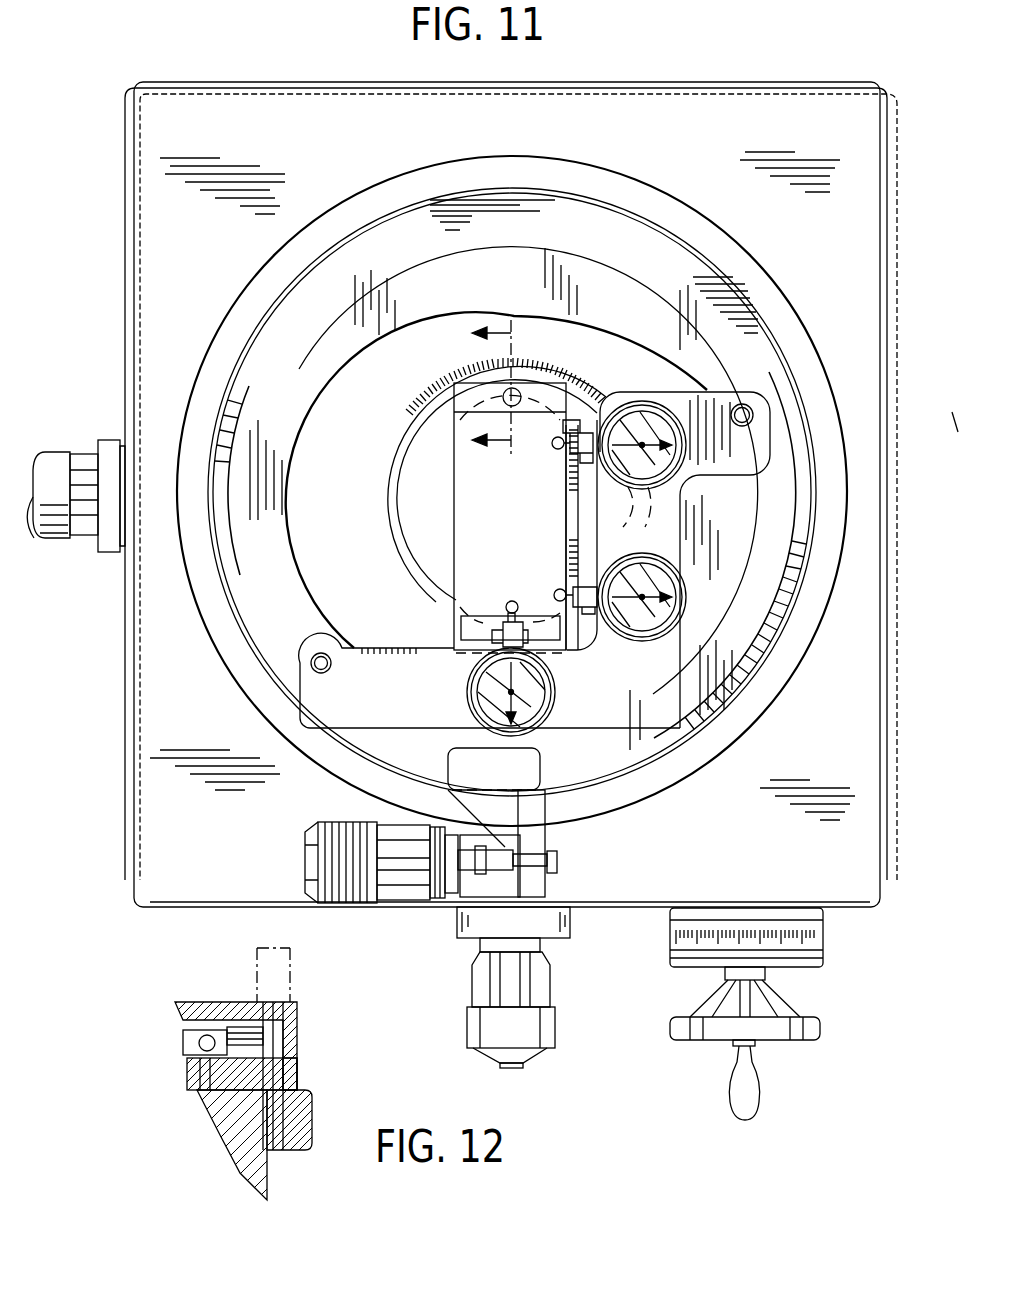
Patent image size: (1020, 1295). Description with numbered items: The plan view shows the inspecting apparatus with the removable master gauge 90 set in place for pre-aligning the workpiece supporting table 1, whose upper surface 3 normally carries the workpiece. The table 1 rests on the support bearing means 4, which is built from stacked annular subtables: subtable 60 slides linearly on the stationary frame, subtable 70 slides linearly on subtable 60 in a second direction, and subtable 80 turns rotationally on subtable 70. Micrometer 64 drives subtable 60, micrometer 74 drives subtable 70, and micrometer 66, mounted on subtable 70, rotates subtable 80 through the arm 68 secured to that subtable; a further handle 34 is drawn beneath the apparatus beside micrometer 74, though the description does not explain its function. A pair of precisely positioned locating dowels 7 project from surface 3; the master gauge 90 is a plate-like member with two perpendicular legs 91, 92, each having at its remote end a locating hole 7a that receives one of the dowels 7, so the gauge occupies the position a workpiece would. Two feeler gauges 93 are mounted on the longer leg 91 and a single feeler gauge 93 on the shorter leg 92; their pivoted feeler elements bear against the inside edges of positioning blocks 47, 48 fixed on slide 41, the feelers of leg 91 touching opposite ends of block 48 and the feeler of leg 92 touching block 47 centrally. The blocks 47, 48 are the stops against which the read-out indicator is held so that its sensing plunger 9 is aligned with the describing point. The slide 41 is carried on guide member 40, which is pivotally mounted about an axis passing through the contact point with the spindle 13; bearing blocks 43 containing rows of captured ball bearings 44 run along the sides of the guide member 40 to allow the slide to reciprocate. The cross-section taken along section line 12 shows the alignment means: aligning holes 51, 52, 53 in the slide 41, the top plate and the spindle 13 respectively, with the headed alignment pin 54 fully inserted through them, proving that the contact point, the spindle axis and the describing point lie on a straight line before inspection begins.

In FIG. 11, the supporting table 1 is at (561, 262).
In FIG. 11, the upper surface 3 is at (456, 272).
In FIG. 11, the support bearing means 4 is at (716, 263).
In FIG. 11, the locating dowels 7 is at (323, 672).
In FIG. 11, the locating hole 7a is at (326, 651).
In FIG. 11, the sensing plunger 9 is at (513, 601).
In FIG. 11, the section line 12 is at (511, 388).
In FIG. 12, the spindle 13 is at (230, 1135).
In FIG. 11, the adjusting knob 34 is at (795, 1002).
In FIG. 12, the guide member 40 is at (215, 1073).
In FIG. 12, the slide member 41 is at (198, 1002).
In FIG. 12, the bearing block 43 is at (241, 1030).
In FIG. 12, the ball bearings 44 is at (183, 1042).
In FIG. 11, the positioning block 47 is at (483, 616).
In FIG. 11, the positioning block 48 is at (567, 530).
In FIG. 12, the aligning hole 51 is at (298, 1026).
In FIG. 12, the aligning hole 52 is at (300, 1070).
In FIG. 12, the aligning hole 53 is at (300, 1112).
In FIG. 12, the alignment pin 54 is at (292, 962).
In FIG. 11, the subtable 60 is at (120, 693).
In FIG. 11, the micrometer 64 is at (64, 530).
In FIG. 11, the micrometer 66 is at (343, 840).
In FIG. 11, the arm 68 is at (535, 823).
In FIG. 11, the subtable 70 is at (216, 825).
In FIG. 11, the micrometer 74 is at (535, 985).
In FIG. 11, the subtable 80 is at (665, 745).
In FIG. 11, the master gauge 90 is at (686, 727).
In FIG. 11, the leg 91 is at (672, 520).
In FIG. 11, the leg 92 is at (389, 724).
In FIG. 11, the feeler gauges 93 is at (641, 404).